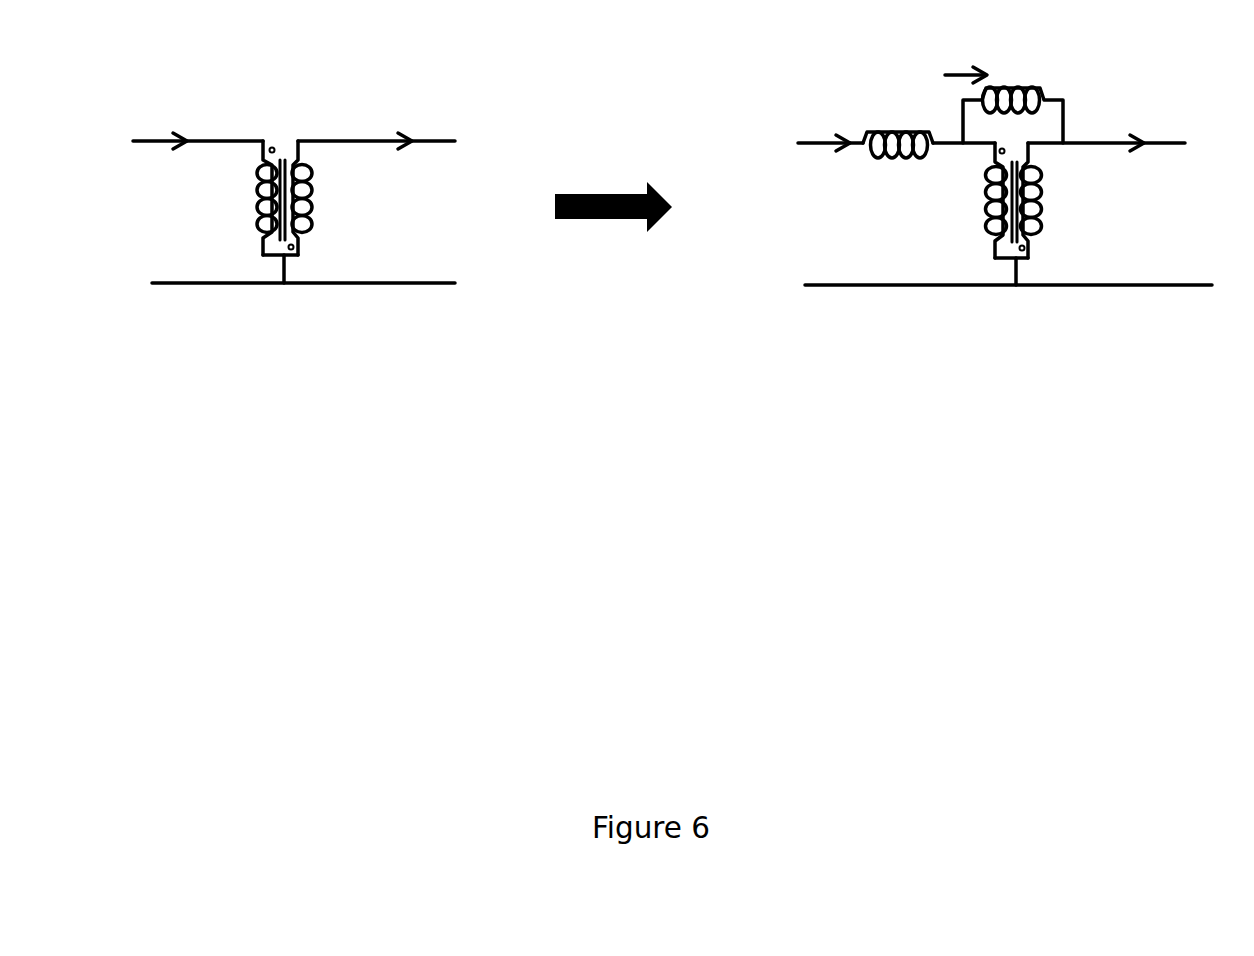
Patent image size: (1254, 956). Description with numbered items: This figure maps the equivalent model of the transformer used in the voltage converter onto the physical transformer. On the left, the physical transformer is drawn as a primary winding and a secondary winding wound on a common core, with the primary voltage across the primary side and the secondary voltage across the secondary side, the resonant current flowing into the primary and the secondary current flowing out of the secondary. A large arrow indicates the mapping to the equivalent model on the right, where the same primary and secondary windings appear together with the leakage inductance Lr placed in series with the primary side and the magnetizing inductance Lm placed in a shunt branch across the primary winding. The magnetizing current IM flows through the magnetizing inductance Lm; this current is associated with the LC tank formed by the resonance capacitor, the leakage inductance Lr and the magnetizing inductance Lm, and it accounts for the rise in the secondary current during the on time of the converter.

The magnetizing current IM is at (966, 60).
The leakage inductance Lr is at (898, 130).
The magnetizing inductance Lm is at (1013, 97).